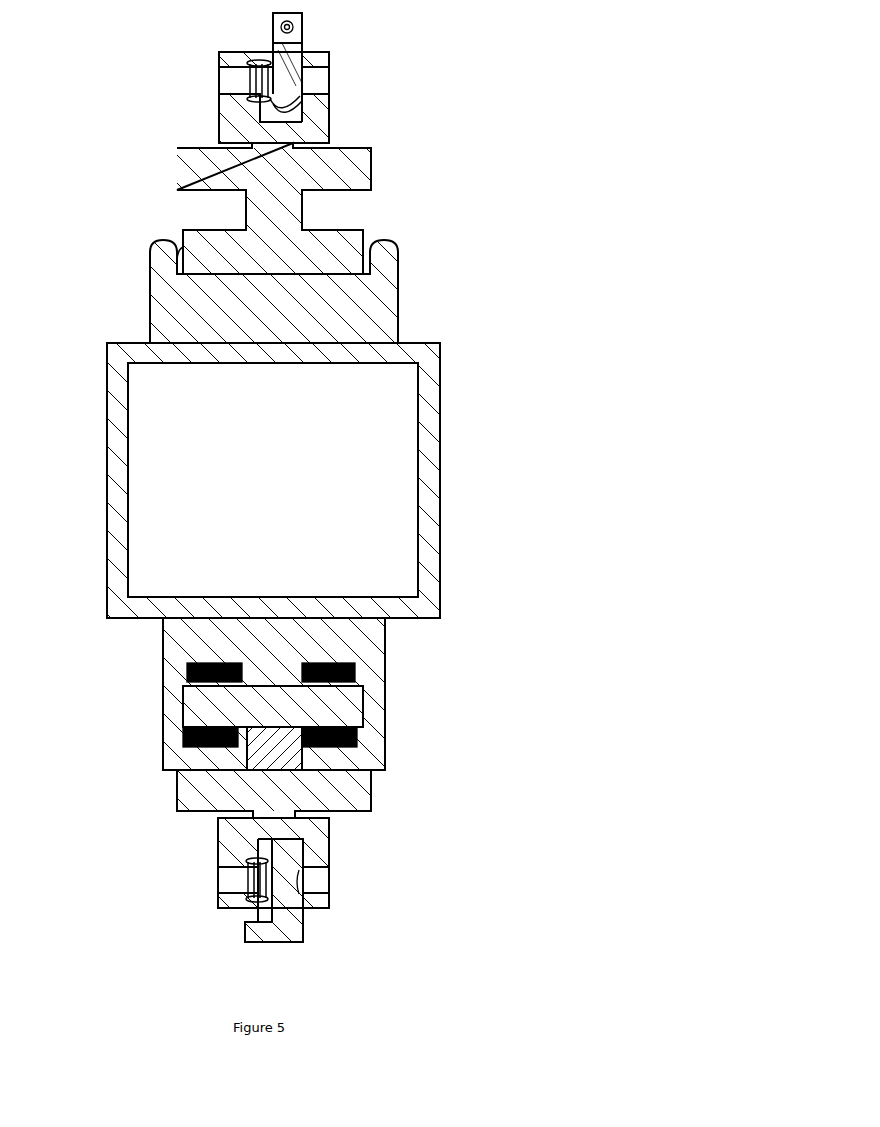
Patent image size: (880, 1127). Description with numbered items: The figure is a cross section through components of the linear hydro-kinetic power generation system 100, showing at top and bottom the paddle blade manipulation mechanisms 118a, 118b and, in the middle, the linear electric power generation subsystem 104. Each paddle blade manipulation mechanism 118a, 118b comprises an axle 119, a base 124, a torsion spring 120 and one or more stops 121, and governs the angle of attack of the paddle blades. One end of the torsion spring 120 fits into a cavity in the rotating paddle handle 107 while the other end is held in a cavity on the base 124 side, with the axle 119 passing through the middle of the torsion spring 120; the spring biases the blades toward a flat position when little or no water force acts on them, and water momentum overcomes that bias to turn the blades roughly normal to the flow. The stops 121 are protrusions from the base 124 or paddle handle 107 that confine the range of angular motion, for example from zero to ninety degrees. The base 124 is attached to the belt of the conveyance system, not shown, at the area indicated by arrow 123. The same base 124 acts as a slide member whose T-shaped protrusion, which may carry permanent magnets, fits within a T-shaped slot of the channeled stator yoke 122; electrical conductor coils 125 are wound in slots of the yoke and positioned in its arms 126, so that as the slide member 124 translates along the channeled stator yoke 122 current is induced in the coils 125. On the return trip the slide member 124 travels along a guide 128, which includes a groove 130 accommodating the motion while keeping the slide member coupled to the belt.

The linear hydro-kinetic power generation system 100 is at (672, 87).
The linear electric power generation subsystem 104 is at (130, 858).
The paddle handle 107 is at (315, 942).
The paddle blade manipulation mechanism 118a is at (438, 52).
The paddle blade manipulation mechanism 118b is at (465, 940).
The axle 119 is at (329, 80).
The torsion spring 120 is at (258, 55).
The stop 121 is at (302, 45).
The channeled stator yoke 122 is at (392, 675).
The area for attaching the base to the belt 123 is at (205, 820).
The base / slide member 124 is at (382, 157).
The electrical conductor coils 125 is at (185, 666).
The arms of the channeled stator yoke 126 is at (202, 757).
The guide 128 is at (413, 270).
The groove 130 is at (181, 244).